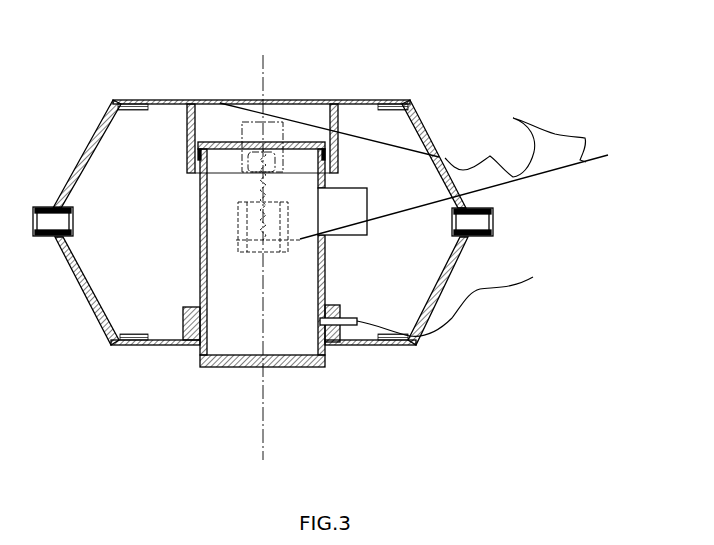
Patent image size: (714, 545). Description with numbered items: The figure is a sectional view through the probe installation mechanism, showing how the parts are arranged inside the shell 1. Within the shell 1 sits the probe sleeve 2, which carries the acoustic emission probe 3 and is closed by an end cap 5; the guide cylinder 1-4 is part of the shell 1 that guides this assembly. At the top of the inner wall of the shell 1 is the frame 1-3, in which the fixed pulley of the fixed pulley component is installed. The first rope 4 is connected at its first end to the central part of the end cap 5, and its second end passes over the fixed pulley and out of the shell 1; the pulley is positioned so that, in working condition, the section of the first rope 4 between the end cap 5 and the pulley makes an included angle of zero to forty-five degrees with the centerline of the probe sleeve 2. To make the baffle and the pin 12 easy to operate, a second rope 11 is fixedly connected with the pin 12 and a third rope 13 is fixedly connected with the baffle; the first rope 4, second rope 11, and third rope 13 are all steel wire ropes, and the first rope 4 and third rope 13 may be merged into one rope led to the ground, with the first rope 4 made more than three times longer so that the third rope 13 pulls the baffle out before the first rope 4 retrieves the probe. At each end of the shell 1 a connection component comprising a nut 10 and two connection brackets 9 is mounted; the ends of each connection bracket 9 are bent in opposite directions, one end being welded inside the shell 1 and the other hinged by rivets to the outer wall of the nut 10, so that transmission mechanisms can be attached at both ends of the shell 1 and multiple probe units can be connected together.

The shell 1 is at (220, 103).
The frame 1-3 is at (192, 142).
The guide cylinder 1-4 is at (337, 335).
The probe sleeve 2 is at (292, 358).
The acoustic emission probe 3 is at (232, 335).
The first rope 4 is at (282, 120).
The end cap 5 is at (302, 147).
The connection bracket 9 is at (433, 143).
The nut 10 is at (480, 207).
The second rope 11 is at (457, 319).
The pin 12 is at (348, 323).
The third rope 13 is at (507, 183).